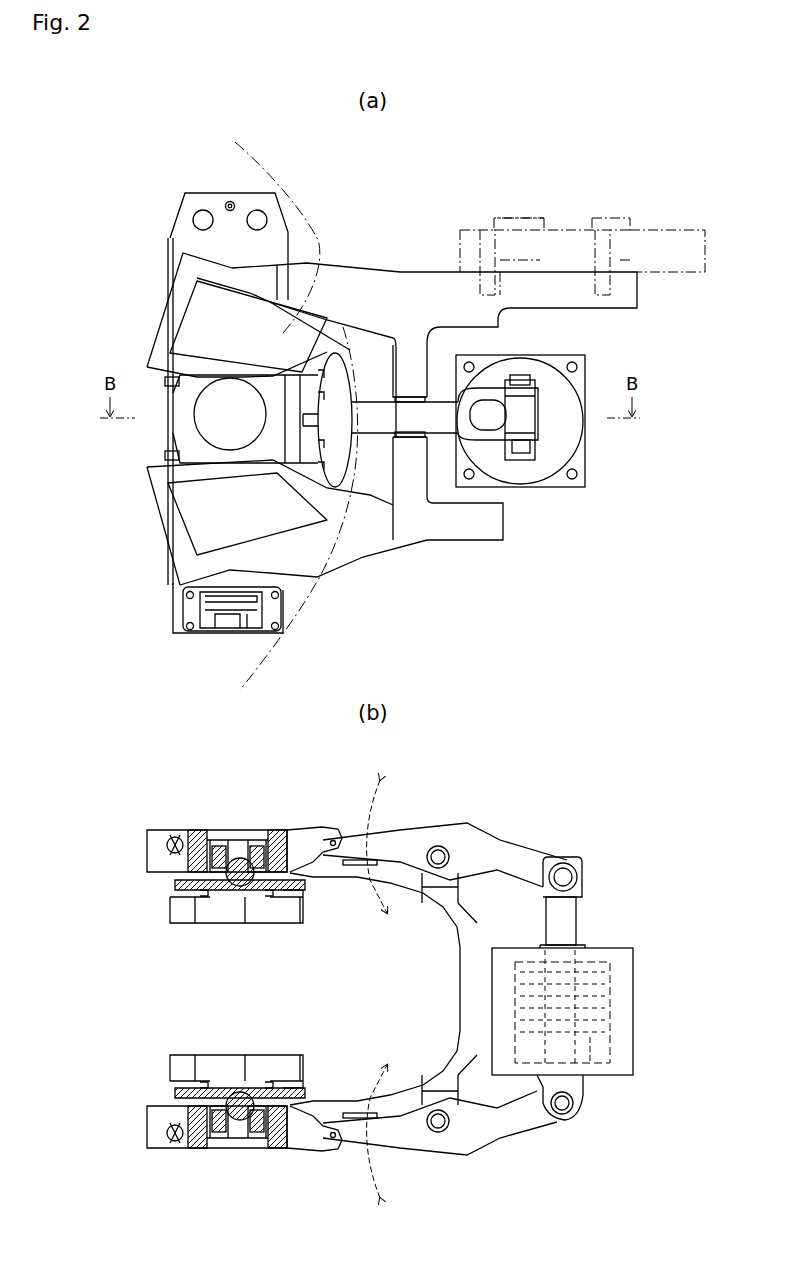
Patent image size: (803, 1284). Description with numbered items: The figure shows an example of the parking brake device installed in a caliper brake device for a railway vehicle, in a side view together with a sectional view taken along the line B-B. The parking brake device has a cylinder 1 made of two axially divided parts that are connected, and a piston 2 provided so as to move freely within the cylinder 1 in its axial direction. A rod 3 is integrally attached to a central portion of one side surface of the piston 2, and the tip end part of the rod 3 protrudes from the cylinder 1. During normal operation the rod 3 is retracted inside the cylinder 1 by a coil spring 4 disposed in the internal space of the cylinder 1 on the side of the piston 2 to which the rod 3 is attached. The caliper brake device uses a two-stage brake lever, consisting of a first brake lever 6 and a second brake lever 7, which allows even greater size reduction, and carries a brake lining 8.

The cylinder 1 is at (570, 442).
The piston 2 is at (590, 1040).
The rod 3 is at (567, 918).
The coil spring 4 is at (607, 982).
The first brake lever 6 is at (442, 423).
The second brake lever 7 is at (280, 333).
The brake lining 8 is at (228, 913).